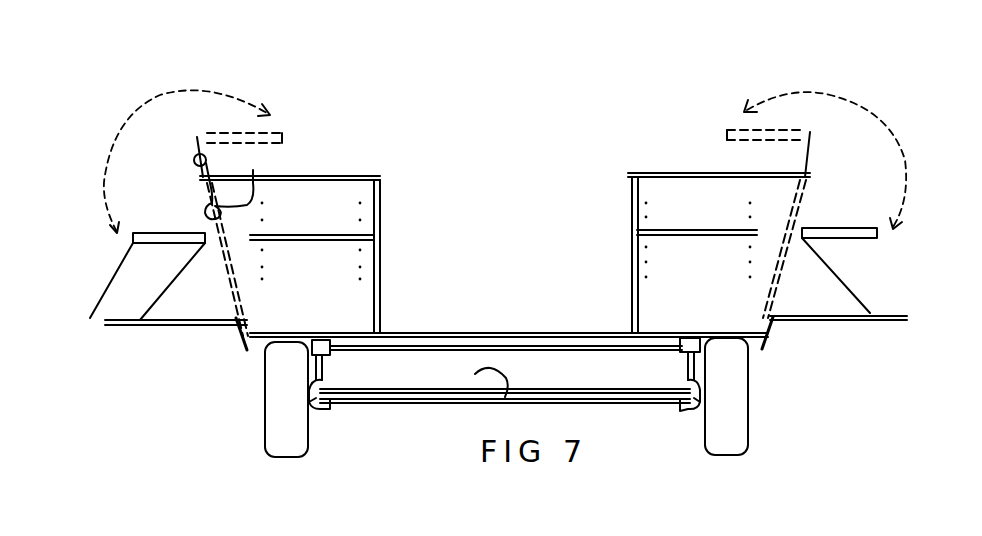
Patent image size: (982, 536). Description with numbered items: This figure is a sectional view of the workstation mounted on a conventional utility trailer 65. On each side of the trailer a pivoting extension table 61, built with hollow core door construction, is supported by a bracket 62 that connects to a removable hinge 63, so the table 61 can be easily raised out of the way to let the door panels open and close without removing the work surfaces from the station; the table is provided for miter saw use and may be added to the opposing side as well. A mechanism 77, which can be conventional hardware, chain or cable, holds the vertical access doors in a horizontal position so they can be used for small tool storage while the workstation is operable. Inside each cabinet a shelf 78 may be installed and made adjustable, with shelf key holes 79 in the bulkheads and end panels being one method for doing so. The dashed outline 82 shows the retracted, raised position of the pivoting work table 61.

The pivoting extension table 61 is at (103, 300).
The bracket 62 is at (206, 158).
The removable hinge 63 is at (190, 188).
The conventional utility trailer 65 is at (487, 347).
The mechanism 77 is at (173, 283).
The shelf 78 is at (340, 240).
The shelf key hole 79 is at (643, 220).
The retracted position of pivoting work table 82 is at (283, 121).